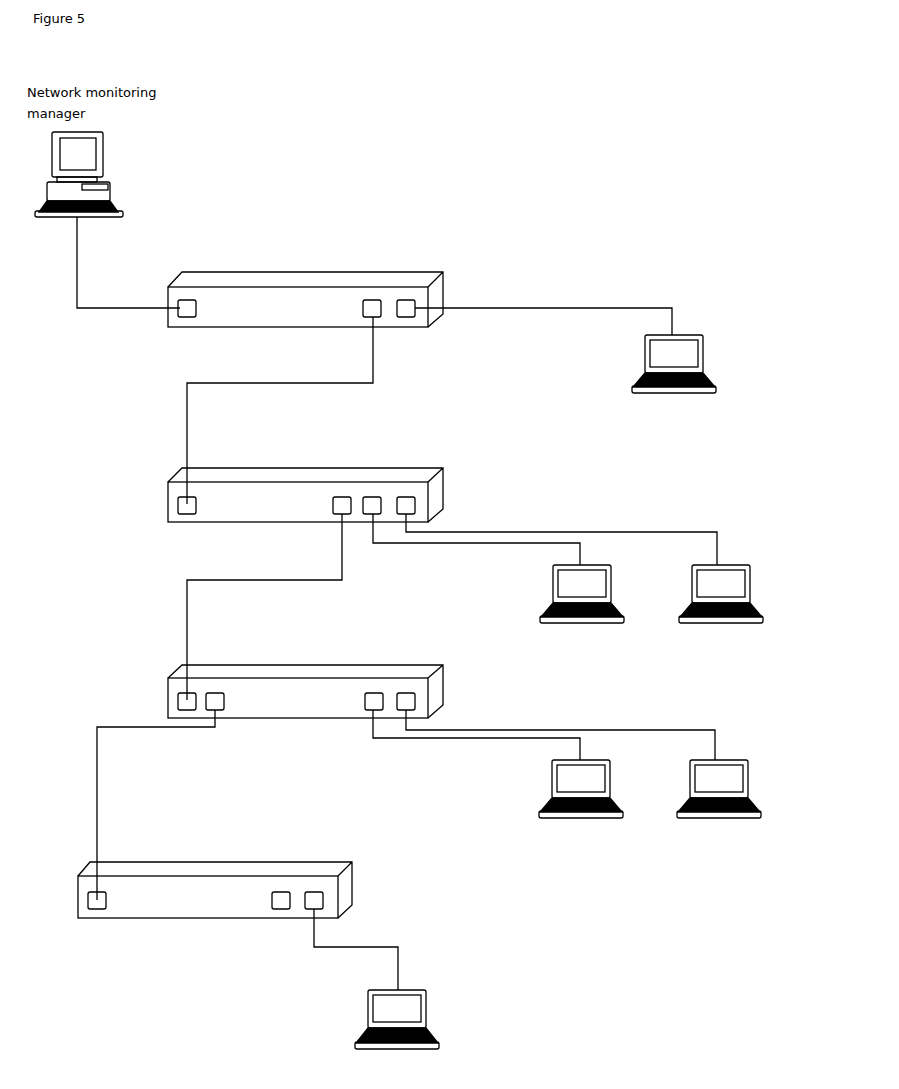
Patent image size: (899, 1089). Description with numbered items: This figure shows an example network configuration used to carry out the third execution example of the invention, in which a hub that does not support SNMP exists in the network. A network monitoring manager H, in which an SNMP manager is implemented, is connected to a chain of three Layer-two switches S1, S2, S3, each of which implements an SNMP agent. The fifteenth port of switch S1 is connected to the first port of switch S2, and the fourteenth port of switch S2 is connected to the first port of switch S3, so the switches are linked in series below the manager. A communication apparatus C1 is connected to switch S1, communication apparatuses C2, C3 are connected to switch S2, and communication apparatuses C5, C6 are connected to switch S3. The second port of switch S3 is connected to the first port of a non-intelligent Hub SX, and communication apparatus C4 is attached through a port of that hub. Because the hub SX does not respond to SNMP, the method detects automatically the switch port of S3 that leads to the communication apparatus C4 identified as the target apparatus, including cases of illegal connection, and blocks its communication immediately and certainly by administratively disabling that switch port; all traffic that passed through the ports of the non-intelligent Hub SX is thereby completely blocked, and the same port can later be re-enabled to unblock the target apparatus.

The network monitoring manager H is at (107, 220).
The Layer-2 switch S1 is at (305, 277).
The Layer-2 switch S2 is at (305, 473).
The Layer-2 switch S3 is at (305, 669).
The non-intelligent Hub SX is at (215, 869).
The communication apparatus C1 is at (680, 376).
The communication apparatus C2 is at (595, 583).
The communication apparatus C3 is at (734, 583).
The communication apparatus C4 is at (410, 1007).
The communication apparatus C5 is at (594, 778).
The communication apparatus C6 is at (733, 778).